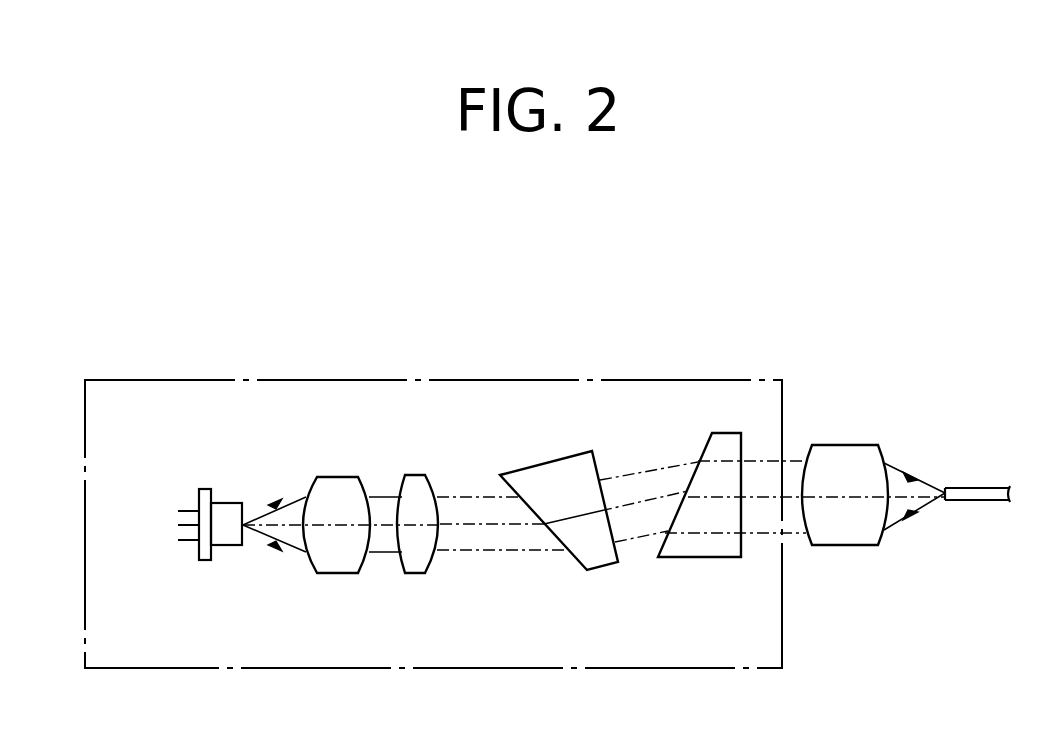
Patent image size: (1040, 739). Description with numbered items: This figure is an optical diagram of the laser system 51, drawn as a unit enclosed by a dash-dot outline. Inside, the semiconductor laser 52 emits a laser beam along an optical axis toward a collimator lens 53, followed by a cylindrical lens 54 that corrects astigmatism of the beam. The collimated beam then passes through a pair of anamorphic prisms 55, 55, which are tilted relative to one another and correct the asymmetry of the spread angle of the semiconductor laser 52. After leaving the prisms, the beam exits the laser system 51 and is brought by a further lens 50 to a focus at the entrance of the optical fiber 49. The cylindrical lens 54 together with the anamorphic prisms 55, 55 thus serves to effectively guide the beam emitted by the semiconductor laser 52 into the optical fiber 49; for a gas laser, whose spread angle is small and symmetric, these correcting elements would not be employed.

The optical fiber 49 is at (983, 501).
The condensing lens 50 is at (857, 546).
The laser system 51 is at (281, 380).
The semiconductor laser 52 is at (229, 537).
The collimator lens 53 is at (347, 562).
The cylindrical lens 54 is at (422, 568).
The anamorphic prisms 55 is at (545, 460).